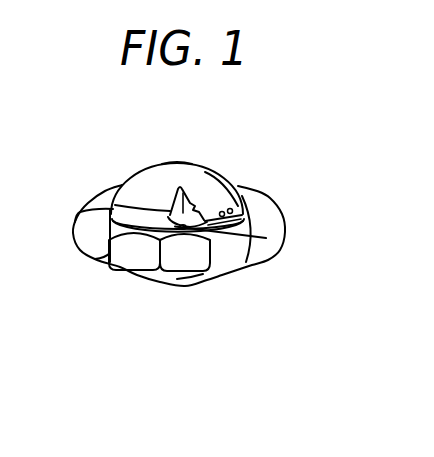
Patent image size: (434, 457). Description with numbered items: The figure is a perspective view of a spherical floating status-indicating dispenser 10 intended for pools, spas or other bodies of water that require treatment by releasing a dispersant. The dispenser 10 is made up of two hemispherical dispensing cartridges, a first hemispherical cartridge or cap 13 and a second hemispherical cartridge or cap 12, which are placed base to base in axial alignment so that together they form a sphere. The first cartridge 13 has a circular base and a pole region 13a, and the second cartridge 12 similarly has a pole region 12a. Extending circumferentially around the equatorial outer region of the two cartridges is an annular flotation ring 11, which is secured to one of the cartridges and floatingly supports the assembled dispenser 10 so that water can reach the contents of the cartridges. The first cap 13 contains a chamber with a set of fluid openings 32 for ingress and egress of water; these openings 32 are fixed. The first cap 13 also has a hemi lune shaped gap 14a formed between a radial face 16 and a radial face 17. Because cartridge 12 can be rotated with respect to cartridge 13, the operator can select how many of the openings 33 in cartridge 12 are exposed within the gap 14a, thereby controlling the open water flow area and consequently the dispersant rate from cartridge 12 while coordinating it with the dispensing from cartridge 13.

The spherical floating status-indicating dispenser 10 is at (304, 175).
The flotation ring 11 is at (92, 257).
The second hemispherical dispensing cartridge 12 is at (147, 280).
The pole region of cartridge 12 12a is at (175, 287).
The first hemispherical dispensing cartridge 13 is at (150, 165).
The pole region of cartridge 13 13a is at (172, 161).
The hemi lune shaped gap 14a is at (187, 197).
The radial face 16 is at (172, 210).
The radial face 17 is at (266, 238).
The fluid openings 32 is at (233, 206).
The openings 33 is at (189, 231).